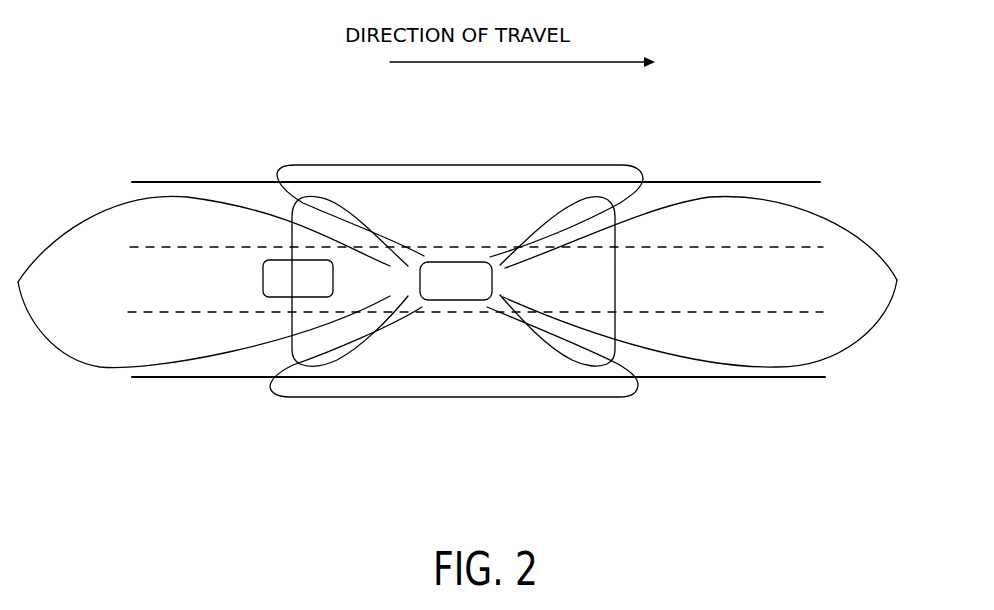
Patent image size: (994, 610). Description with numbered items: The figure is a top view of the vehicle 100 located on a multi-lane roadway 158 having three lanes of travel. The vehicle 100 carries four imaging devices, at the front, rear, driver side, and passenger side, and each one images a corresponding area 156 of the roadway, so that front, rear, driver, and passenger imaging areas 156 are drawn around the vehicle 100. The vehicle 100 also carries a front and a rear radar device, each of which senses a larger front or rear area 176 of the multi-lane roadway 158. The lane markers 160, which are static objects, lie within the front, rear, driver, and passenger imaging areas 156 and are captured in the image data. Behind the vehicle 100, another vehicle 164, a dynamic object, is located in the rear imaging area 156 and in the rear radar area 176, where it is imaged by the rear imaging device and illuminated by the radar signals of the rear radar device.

The vehicle 100 is at (452, 262).
The imaging areas 156 is at (456, 165).
The multi-lane roadway 158 is at (718, 118).
The lane markers 160 is at (743, 182).
The vehicle 164 is at (263, 265).
The radar areas 176 is at (62, 237).